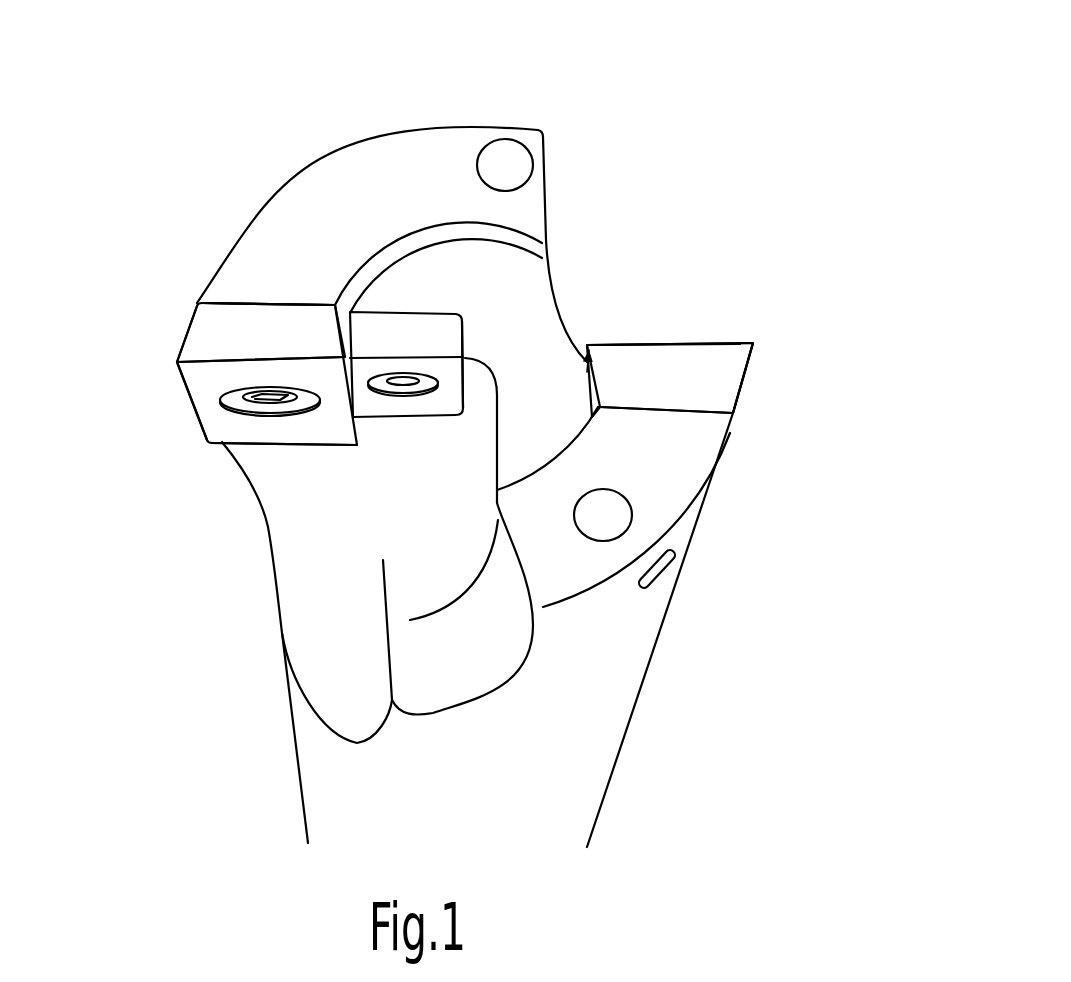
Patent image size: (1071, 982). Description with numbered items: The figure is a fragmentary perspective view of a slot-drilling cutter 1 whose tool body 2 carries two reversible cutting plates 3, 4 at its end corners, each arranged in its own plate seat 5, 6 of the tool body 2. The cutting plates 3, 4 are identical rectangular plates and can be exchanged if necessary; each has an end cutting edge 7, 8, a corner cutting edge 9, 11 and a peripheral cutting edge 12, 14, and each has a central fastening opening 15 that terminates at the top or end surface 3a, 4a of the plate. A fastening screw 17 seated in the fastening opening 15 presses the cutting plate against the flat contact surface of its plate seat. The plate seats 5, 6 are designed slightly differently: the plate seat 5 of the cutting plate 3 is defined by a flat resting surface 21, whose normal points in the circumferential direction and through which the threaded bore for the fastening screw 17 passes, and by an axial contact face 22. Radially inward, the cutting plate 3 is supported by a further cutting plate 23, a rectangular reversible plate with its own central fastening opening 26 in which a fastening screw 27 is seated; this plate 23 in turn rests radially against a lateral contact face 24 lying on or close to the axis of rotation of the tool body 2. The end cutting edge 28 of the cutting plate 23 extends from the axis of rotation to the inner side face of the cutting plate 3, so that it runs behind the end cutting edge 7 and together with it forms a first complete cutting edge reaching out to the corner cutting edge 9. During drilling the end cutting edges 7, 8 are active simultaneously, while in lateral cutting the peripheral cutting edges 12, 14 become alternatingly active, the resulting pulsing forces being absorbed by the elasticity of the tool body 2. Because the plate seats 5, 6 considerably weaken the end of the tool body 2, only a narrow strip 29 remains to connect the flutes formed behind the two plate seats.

The slot-drilling cutter 1 is at (748, 134).
The tool body 2 is at (587, 745).
The cutting plate 3 is at (203, 377).
The top or end surface 3a is at (227, 427).
The cutting plate 4 is at (730, 340).
The top or end surface 4a is at (623, 340).
The plate seat 5 is at (264, 288).
The plate seat 6 is at (673, 420).
The end cutting edge 7 is at (237, 358).
The end cutting edge 8 is at (657, 342).
The corner cutting edge 9 is at (177, 362).
The corner cutting edge 11 is at (753, 343).
The peripheral cutting edge 12 is at (197, 430).
The peripheral cutting edge 14 is at (752, 380).
The central fastening opening 15 is at (293, 417).
The fastening screw 17 is at (250, 390).
The flat resting surface 21 is at (303, 300).
The axial contact face 22 is at (266, 449).
The further cutting plate 23 is at (413, 323).
The lateral contact face 24 is at (467, 377).
The central fastening opening 26 is at (405, 380).
The clamping screw 27 is at (407, 393).
The end cutting edge 28 is at (382, 353).
The narrow strip 29 is at (530, 353).